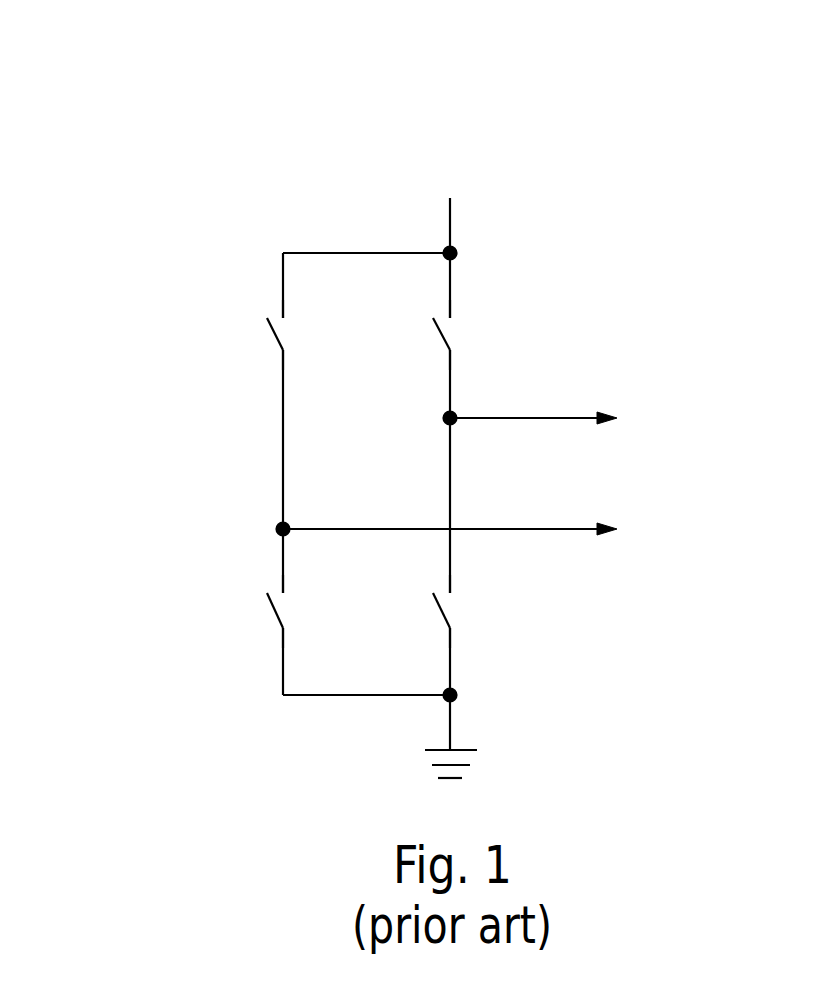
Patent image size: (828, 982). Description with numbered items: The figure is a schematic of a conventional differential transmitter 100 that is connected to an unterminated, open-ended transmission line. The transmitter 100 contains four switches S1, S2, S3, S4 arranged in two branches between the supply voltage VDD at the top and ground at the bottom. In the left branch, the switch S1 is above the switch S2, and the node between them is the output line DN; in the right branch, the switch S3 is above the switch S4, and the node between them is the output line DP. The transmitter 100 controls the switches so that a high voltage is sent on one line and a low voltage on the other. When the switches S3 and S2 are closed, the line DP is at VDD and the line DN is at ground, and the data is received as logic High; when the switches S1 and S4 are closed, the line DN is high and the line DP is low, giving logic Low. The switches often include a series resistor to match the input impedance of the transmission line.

The conventional differential transmitter 100 is at (195, 155).
The switch S1 is at (302, 335).
The switch S2 is at (303, 611).
The switch S3 is at (469, 335).
The switch S4 is at (469, 611).
The supply voltage VDD is at (467, 207).
The output line D_P DP is at (562, 418).
The output line D_N DN is at (479, 528).